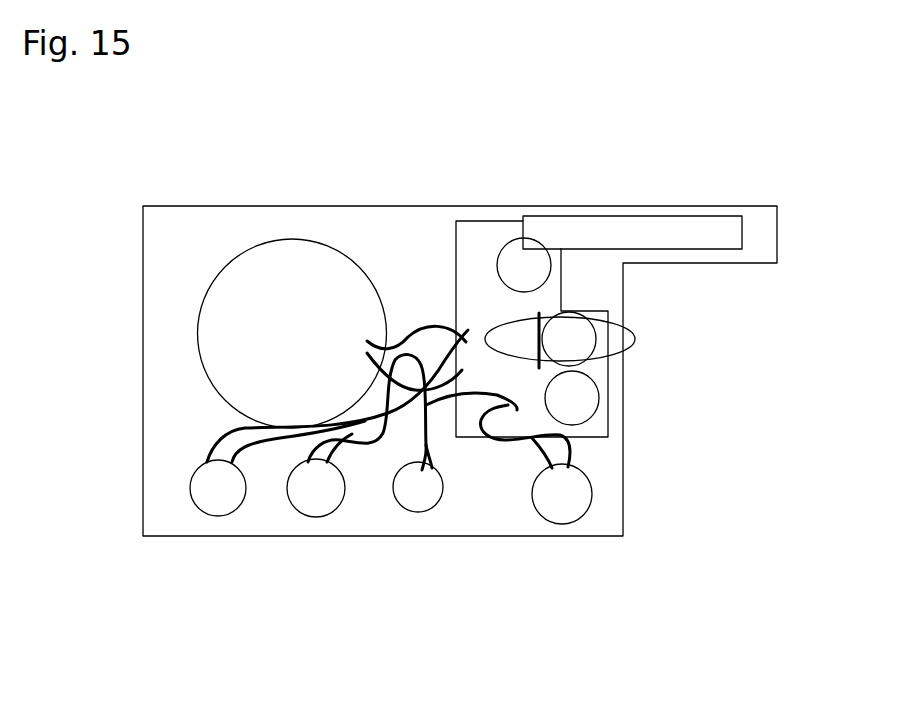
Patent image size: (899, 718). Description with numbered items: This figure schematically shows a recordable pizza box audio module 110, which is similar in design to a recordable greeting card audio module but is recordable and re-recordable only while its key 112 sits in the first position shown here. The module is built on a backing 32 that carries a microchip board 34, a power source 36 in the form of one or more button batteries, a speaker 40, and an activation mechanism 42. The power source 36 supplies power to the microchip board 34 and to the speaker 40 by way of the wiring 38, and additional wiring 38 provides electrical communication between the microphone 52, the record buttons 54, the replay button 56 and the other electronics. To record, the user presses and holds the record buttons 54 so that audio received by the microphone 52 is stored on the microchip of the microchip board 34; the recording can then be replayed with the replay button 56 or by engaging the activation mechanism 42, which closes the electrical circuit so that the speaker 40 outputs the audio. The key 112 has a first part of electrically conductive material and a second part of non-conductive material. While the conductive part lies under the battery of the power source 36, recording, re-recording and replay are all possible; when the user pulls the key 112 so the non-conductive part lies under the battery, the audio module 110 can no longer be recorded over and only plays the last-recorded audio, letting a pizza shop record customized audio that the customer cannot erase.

The pizza box audio module 110 is at (775, 120).
The backing 32 is at (165, 437).
The speaker 40 is at (274, 304).
The activation mechanism 42 is at (640, 229).
The microchip board 34 is at (598, 425).
The power source 36 is at (563, 397).
The key 112 is at (620, 337).
The wiring 38 is at (447, 349).
The record button 54 is at (317, 490).
The microphone 52 is at (418, 487).
The replay button 56 is at (562, 495).